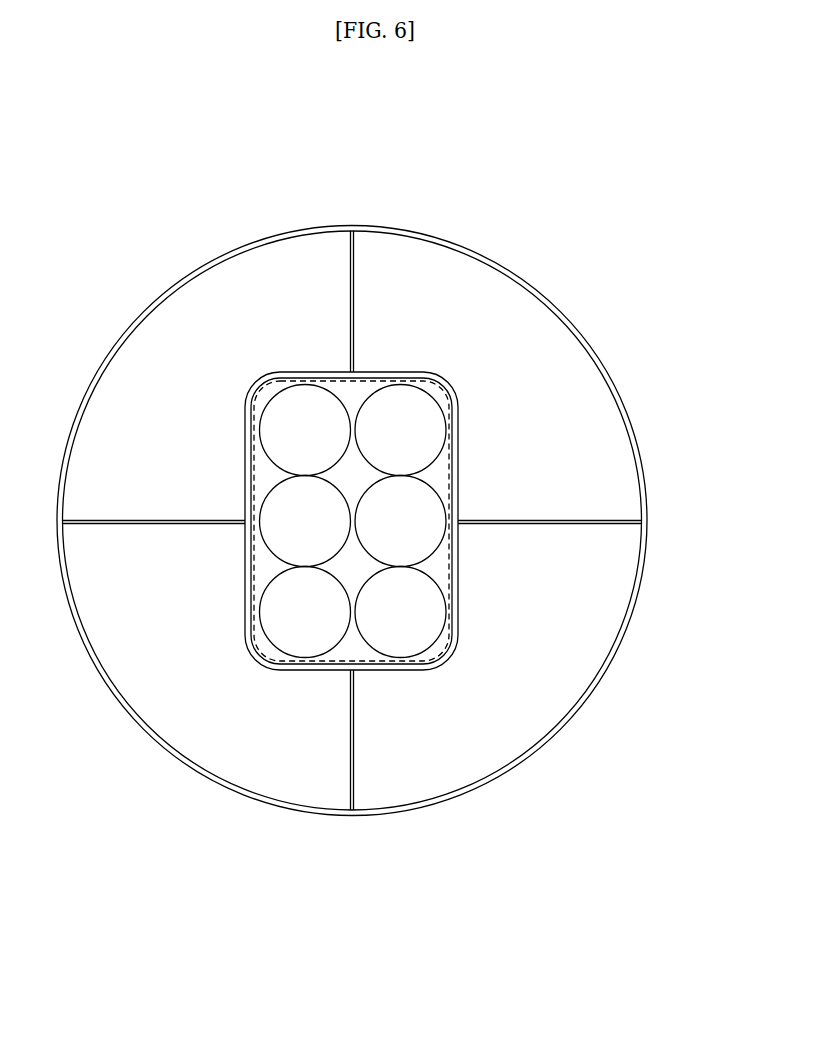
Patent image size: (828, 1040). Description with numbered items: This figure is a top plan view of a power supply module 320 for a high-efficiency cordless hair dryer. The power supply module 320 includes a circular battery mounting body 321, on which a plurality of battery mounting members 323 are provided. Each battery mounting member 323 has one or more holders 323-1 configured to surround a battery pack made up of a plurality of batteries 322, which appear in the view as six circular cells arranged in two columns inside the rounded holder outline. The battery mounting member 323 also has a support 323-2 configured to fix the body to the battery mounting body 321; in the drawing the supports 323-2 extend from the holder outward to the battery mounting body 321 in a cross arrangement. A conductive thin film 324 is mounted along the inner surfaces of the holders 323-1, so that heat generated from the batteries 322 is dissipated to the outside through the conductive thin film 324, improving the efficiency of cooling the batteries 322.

The power supply module 320 is at (375, 128).
The battery mounting body 321 is at (579, 317).
The battery 322 is at (419, 504).
The battery mounting member 323 is at (352, 562).
The holder 323-1 is at (422, 669).
The support 323-2 is at (595, 842).
The conductive thin film 324 is at (448, 384).